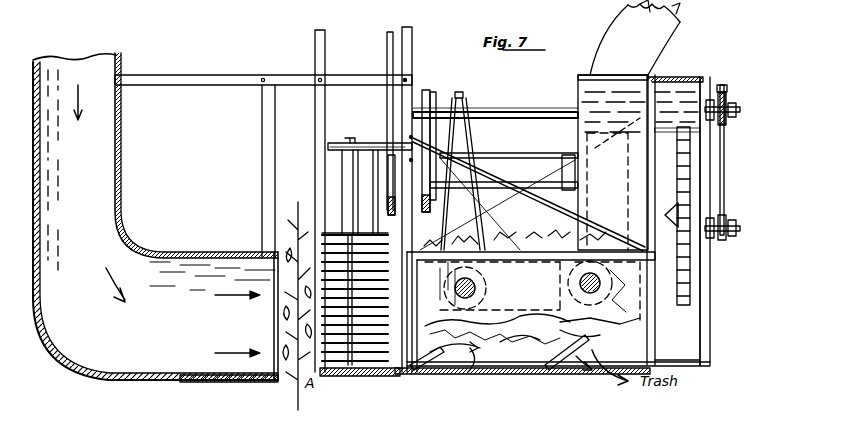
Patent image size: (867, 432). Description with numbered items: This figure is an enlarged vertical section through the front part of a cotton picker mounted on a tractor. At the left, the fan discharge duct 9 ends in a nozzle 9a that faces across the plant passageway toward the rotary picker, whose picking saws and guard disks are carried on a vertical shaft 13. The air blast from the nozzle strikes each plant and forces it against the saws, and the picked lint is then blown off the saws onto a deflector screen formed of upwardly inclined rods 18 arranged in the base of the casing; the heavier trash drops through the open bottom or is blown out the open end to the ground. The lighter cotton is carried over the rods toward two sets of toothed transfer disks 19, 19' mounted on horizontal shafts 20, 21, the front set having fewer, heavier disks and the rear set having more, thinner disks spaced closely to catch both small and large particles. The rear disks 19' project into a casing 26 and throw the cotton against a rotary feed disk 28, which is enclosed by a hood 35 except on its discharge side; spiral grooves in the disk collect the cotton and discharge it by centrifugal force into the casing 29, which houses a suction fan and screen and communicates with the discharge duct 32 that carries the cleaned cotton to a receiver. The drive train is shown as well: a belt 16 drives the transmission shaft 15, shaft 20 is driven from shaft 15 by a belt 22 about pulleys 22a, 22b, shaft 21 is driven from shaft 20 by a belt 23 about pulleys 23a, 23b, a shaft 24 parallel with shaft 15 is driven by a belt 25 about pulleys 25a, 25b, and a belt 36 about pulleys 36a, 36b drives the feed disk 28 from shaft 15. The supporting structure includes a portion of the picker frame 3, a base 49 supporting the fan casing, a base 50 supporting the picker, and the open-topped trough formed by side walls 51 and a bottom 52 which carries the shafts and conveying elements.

The portion of the frame of the picker 3 is at (262, 125).
The discharge duct 9 is at (104, 152).
The nozzle 9a is at (275, 305).
The vertical shaft 13 is at (348, 180).
The transmission shaft 15 is at (524, 112).
The belt 16 is at (387, 44).
The upwardly inclined rods 18 is at (430, 360).
The toothed transfer disks 19 is at (457, 374).
The toothed transfer disks 19' is at (600, 341).
The horizontal shaft 20 is at (476, 290).
The horizontal shaft 21 is at (600, 280).
The belt 22 is at (488, 230).
The pulley 22a is at (467, 106).
The pulley 22b is at (490, 262).
The belt 23 is at (522, 340).
The pulley 23a is at (455, 336).
The pulley 23b is at (638, 322).
The shaft 24 is at (525, 178).
The belt 25 is at (433, 110).
The pulley 25a is at (425, 104).
The pulley 25b is at (425, 208).
The casing 26 is at (693, 347).
The rotary feed disk 28 is at (690, 272).
The casing 29 is at (580, 82).
The discharge duct 32 is at (612, 24).
The hood 35 is at (680, 88).
The belt 36 is at (727, 165).
The pulley 36a is at (727, 88).
The pulley 36b is at (726, 235).
The base 49 is at (238, 383).
The base 50 is at (368, 378).
The side walls 51 is at (546, 374).
The bottom 52 is at (590, 372).